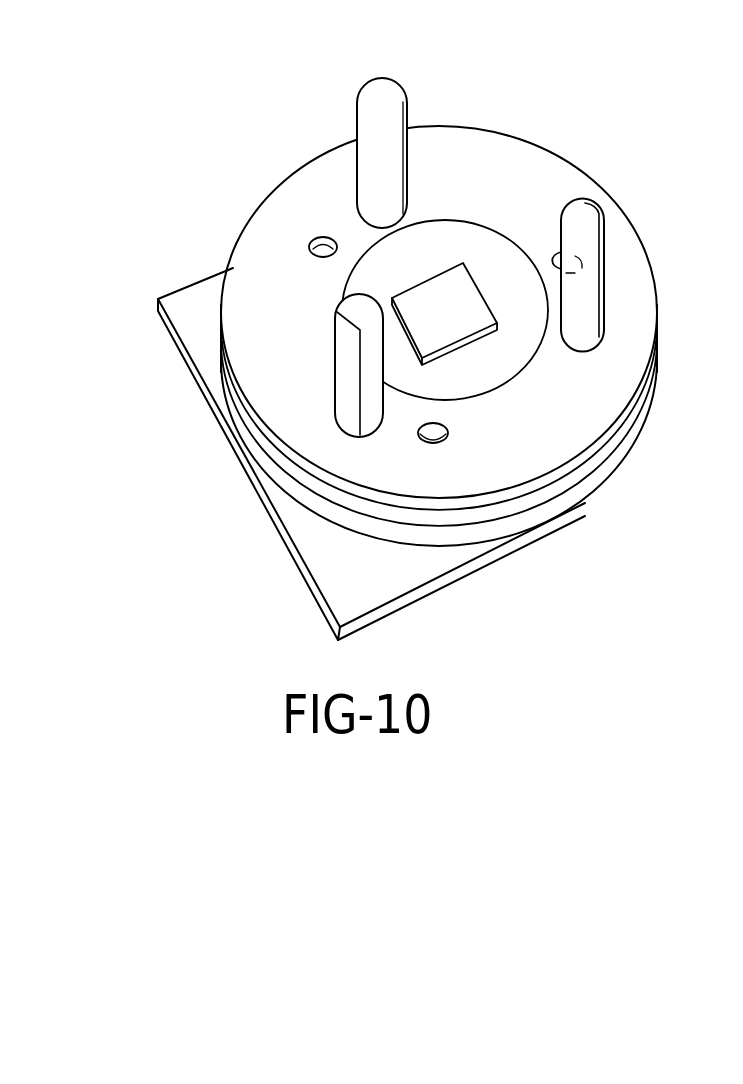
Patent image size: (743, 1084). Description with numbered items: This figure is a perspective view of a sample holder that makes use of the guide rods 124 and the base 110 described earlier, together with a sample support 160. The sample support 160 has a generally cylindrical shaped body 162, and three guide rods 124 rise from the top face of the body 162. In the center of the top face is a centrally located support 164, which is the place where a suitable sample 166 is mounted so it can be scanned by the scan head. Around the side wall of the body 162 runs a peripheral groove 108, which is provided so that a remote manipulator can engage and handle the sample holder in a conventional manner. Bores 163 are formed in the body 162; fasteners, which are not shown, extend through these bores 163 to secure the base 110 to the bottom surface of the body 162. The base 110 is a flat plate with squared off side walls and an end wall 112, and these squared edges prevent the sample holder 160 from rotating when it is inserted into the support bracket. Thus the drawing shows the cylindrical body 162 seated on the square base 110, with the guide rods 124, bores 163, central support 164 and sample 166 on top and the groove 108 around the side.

The peripheral groove 108 is at (537, 507).
The base 110 is at (347, 582).
The end wall 112 is at (258, 487).
The guide rods 124 is at (377, 97).
The sample support 160 is at (538, 93).
The body 162 is at (640, 270).
The bores 163 is at (312, 247).
The centrally located support 164 is at (477, 382).
The sample 166 is at (446, 284).